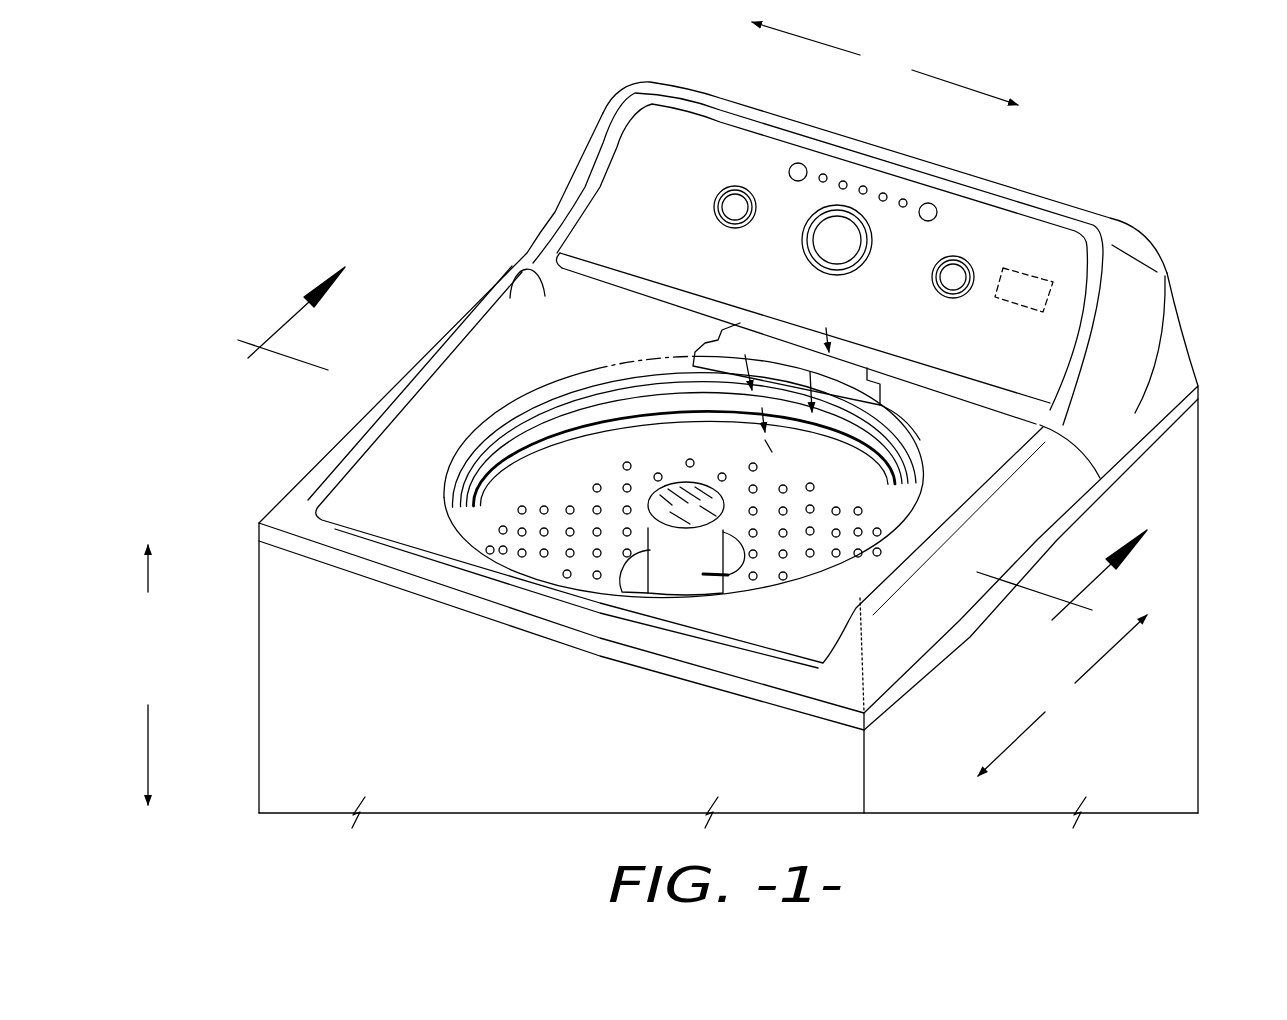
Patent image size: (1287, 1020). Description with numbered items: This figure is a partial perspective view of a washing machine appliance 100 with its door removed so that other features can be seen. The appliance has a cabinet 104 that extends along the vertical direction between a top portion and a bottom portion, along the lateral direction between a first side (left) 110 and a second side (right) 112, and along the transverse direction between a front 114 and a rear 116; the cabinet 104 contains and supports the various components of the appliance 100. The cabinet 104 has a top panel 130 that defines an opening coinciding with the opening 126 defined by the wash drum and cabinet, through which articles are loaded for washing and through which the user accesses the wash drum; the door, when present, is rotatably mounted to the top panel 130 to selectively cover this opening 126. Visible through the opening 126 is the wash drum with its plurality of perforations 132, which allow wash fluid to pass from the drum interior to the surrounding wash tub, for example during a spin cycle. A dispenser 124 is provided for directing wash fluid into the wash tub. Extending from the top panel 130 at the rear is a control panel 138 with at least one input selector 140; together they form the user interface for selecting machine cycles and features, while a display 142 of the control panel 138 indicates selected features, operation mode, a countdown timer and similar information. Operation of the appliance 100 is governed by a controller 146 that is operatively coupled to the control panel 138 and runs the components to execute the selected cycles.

The washing machine appliance 100 is at (1160, 122).
The cabinet 104 is at (542, 739).
The first side (left) 110 is at (312, 445).
The second side (right) 112 is at (1122, 508).
The front 114 is at (243, 527).
The rear 116 is at (507, 242).
The dispenser 124 is at (822, 362).
The opening 126 is at (520, 440).
The top panel 130 is at (997, 527).
The perforations 132 is at (594, 484).
The control panel 138 is at (995, 232).
The input selector 140 is at (828, 238).
The display 142 is at (945, 205).
The controller 146 is at (1025, 270).